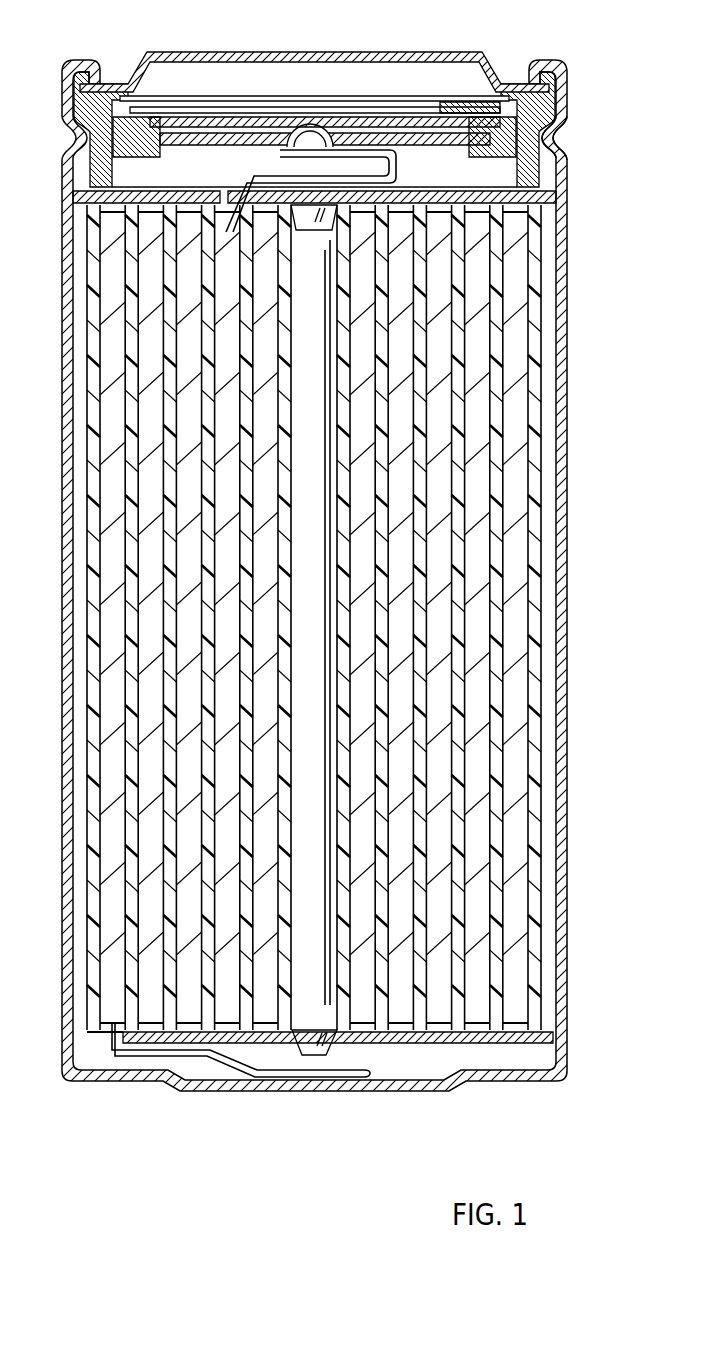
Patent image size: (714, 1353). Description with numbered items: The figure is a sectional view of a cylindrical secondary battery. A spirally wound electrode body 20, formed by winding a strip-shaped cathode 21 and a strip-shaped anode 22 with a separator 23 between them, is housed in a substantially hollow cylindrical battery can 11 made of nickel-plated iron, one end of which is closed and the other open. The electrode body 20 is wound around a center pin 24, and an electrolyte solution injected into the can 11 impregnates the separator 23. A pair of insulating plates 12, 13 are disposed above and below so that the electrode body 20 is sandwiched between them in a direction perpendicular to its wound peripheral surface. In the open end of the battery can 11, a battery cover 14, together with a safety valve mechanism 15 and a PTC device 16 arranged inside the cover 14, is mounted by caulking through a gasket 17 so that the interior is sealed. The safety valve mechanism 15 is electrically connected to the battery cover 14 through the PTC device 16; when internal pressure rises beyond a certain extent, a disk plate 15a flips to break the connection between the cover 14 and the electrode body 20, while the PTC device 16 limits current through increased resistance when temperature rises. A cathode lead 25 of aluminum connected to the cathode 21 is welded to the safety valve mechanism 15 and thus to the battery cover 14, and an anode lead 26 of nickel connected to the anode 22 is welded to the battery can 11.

The battery can 11 is at (573, 266).
The insulating plate 12 is at (560, 200).
The insulating plate 13 is at (555, 1037).
The battery cover 14 is at (283, 52).
The safety valve mechanism 15 is at (440, 104).
The disk plate 15a is at (397, 117).
The PTC device 16 is at (545, 100).
The gasket 17 is at (560, 165).
The spirally wound electrode body 20 is at (356, 617).
The cathode 21 is at (480, 457).
The anode 22 is at (515, 515).
The separator 23 is at (495, 590).
The center pin 24 is at (310, 630).
The cathode lead 25 is at (293, 142).
The anode lead 26 is at (213, 1062).